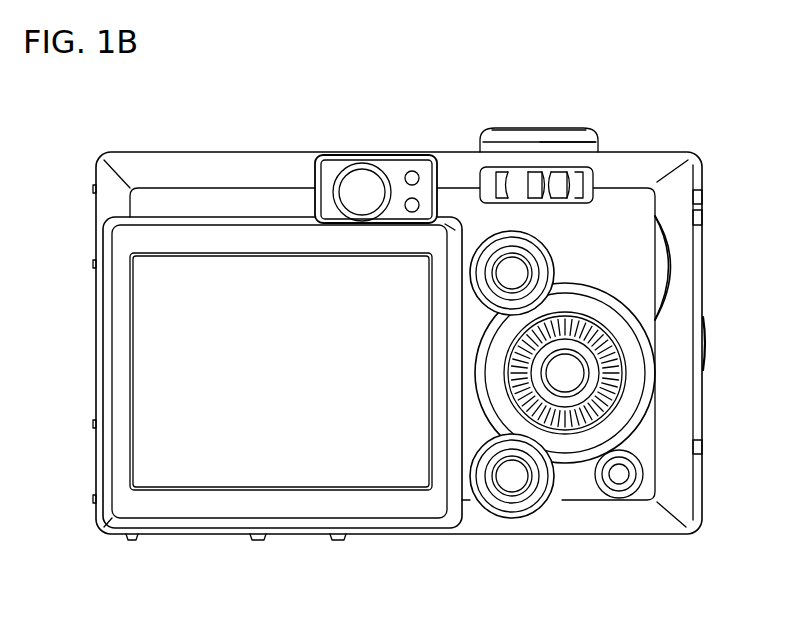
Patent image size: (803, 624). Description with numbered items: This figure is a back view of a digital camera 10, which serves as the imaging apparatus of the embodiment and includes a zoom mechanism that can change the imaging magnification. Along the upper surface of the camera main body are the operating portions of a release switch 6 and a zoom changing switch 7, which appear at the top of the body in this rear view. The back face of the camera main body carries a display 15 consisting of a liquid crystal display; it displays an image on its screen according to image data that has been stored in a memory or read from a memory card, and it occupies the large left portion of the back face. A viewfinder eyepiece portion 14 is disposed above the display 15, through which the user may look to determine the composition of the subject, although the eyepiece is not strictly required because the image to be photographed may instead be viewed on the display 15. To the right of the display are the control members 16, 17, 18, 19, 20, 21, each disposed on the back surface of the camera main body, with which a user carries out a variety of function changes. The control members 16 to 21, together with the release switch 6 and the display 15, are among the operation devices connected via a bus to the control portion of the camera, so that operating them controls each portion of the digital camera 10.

The release switch 6 is at (536, 126).
The zoom changing switch 7 is at (572, 142).
The digital camera 10 is at (200, 168).
The viewfinder eyepiece portion 14 is at (362, 182).
The display 15 is at (392, 470).
The control member 16 is at (562, 182).
The control member 17 is at (517, 273).
The control member 18 is at (563, 373).
The control member 19 is at (522, 477).
The control member 20 is at (619, 475).
The control member 21 is at (607, 395).